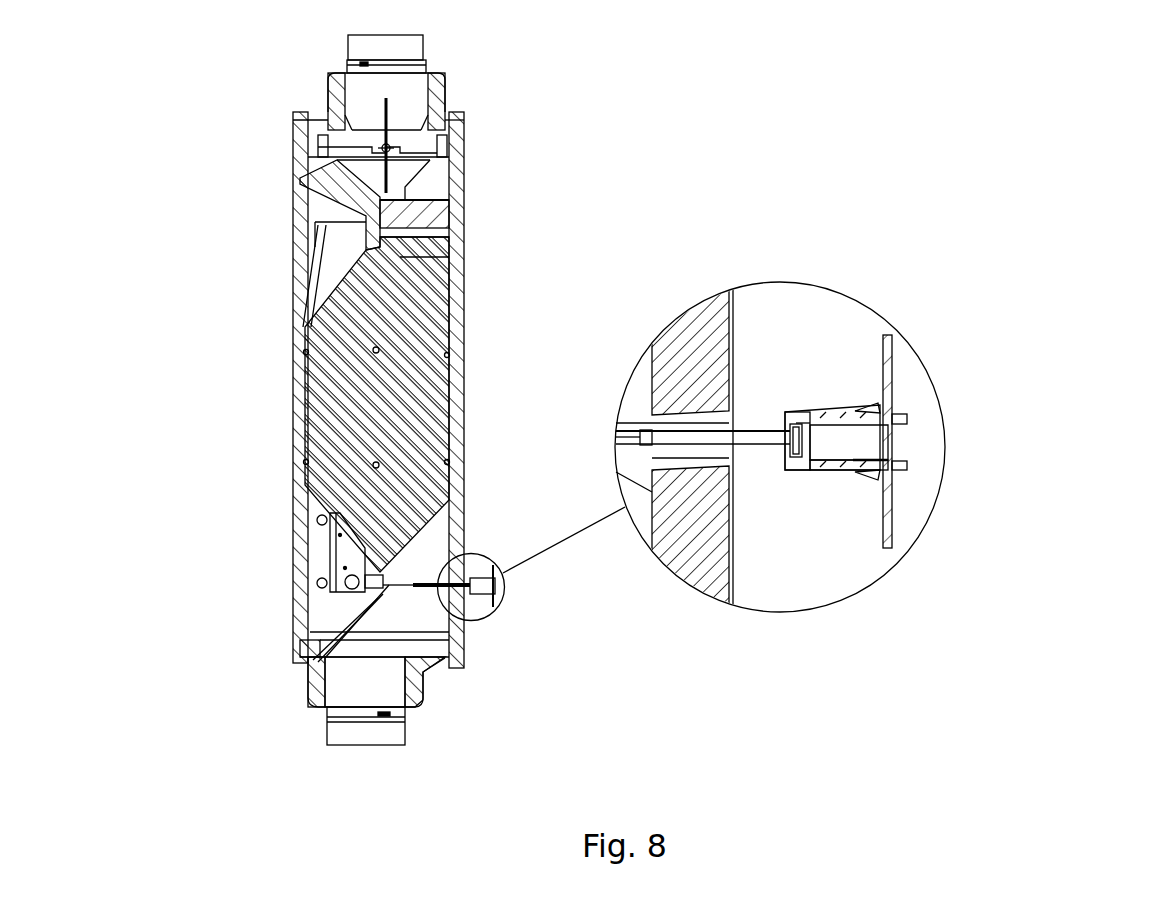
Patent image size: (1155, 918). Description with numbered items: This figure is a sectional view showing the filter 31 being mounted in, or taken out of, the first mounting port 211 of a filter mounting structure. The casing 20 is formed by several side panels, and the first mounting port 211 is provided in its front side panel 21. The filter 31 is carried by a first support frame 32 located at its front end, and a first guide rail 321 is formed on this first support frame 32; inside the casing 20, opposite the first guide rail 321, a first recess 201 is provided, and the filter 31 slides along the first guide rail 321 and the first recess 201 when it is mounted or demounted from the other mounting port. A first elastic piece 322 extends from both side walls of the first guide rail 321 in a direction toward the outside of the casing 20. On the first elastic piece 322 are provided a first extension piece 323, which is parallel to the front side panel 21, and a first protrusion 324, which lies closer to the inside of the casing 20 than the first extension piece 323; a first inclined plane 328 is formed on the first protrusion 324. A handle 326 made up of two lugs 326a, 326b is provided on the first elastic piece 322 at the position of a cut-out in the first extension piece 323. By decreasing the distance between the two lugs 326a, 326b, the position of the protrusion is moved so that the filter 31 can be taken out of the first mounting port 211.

The casing 20 is at (465, 218).
The first recess 201 is at (310, 672).
The front side panel 21 is at (735, 340).
The first mounting port 211 is at (734, 427).
The filter 31 is at (737, 440).
The first support frame 32 is at (966, 474).
The first guide rail 321 is at (800, 464).
The first elastic piece 322 is at (821, 413).
The first extension piece 323 is at (893, 377).
The first protrusion 324 is at (889, 425).
The handle 326 is at (1020, 449).
The lug 326a is at (907, 419).
The lug 326b is at (907, 466).
The first inclined plane 328 is at (868, 406).